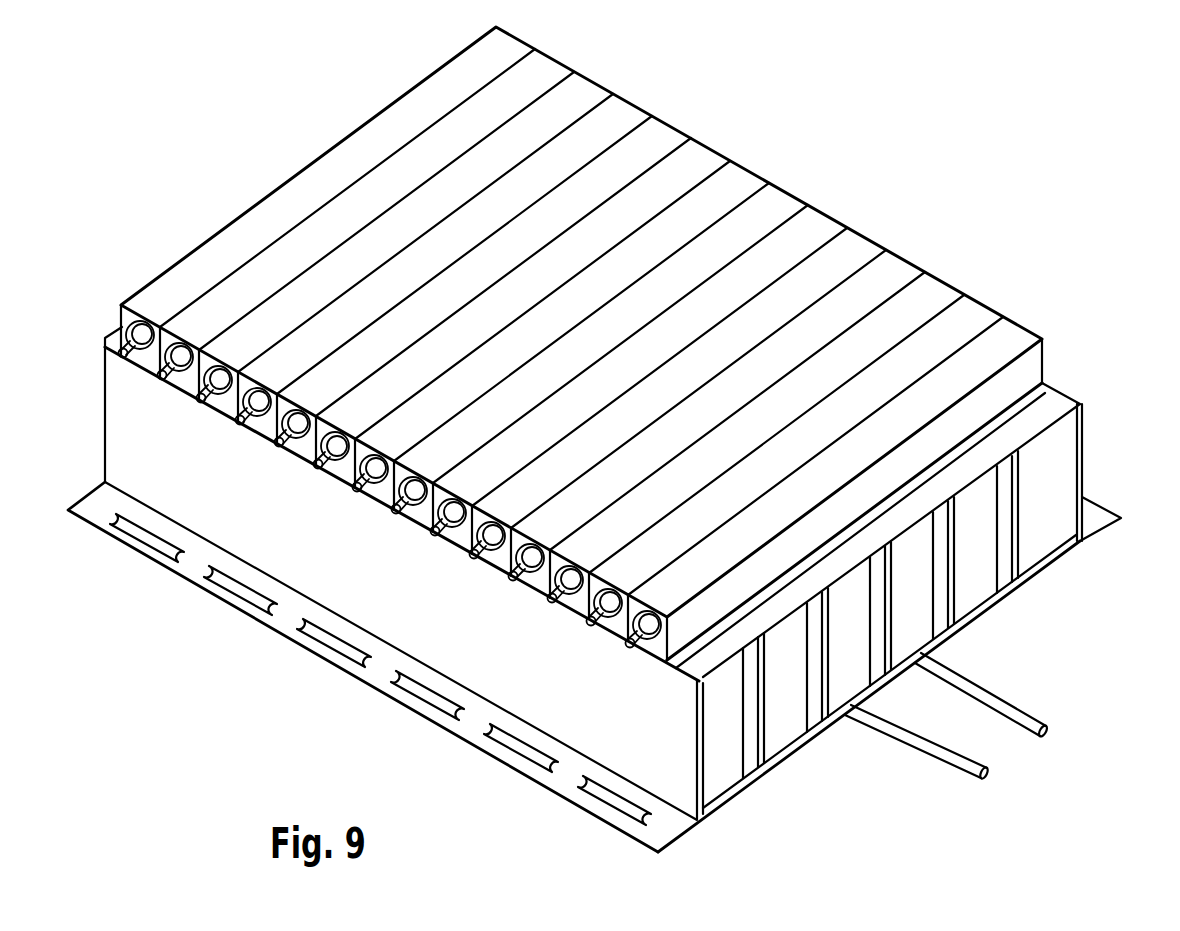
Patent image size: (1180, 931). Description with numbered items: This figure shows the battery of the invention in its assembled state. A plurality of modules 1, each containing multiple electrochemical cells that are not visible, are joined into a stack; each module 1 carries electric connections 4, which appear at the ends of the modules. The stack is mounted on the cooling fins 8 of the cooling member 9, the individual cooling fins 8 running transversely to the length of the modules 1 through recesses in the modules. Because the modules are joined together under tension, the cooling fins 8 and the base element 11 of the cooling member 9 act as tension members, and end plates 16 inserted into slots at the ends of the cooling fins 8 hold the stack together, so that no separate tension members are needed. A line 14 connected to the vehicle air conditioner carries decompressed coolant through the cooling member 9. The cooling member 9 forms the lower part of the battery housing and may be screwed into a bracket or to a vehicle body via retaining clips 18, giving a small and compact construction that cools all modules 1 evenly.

The module 1 is at (584, 104).
The electric connection 4 is at (173, 378).
The cooling fin 8 is at (828, 700).
The cooling member 9 is at (752, 780).
The base element 11 is at (1050, 540).
The line 14 is at (1013, 696).
The end plate 16 is at (1048, 465).
The retaining clip 18 is at (185, 562).